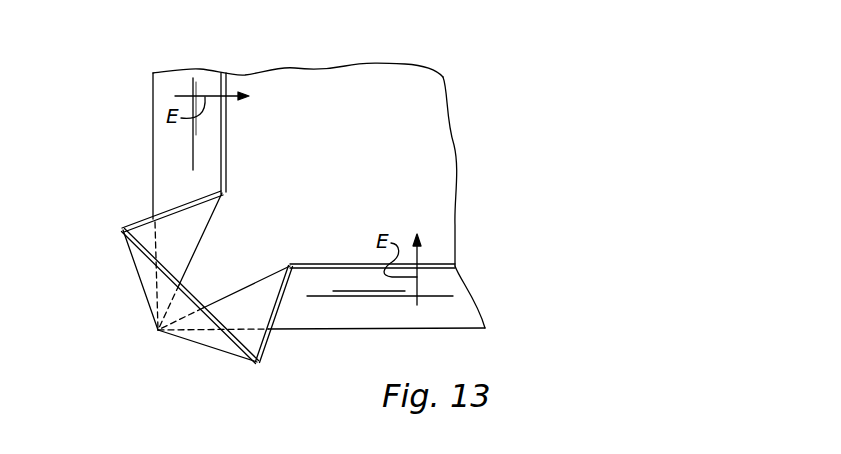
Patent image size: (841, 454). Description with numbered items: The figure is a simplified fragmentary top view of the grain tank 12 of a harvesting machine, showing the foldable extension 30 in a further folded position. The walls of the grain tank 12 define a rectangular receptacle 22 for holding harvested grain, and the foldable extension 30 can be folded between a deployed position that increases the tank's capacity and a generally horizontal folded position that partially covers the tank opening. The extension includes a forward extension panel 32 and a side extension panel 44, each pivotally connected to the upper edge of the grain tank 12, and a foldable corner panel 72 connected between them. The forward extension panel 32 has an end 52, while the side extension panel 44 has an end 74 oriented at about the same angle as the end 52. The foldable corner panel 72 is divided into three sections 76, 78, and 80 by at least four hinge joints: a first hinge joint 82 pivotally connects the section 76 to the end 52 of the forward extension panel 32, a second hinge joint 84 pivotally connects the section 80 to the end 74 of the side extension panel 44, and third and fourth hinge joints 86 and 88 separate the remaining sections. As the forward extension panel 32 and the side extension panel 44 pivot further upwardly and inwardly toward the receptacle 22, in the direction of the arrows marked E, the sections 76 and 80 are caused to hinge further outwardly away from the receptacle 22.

The grain tank 12 is at (445, 77).
The receptacle 22 is at (402, 106).
The foldable extension 30 is at (485, 328).
The forward extension panel 32 is at (458, 275).
The side extension panel 44 is at (206, 77).
The end 52 is at (293, 265).
The foldable corner panel 72 is at (195, 343).
The end 74 is at (223, 193).
The section 76 is at (262, 358).
The section 78 is at (135, 266).
The section 80 is at (175, 207).
The first hinge joint 82 is at (250, 286).
The second hinge joint 84 is at (207, 228).
The third hinge joint 86 is at (235, 358).
The fourth hinge joint 88 is at (145, 303).